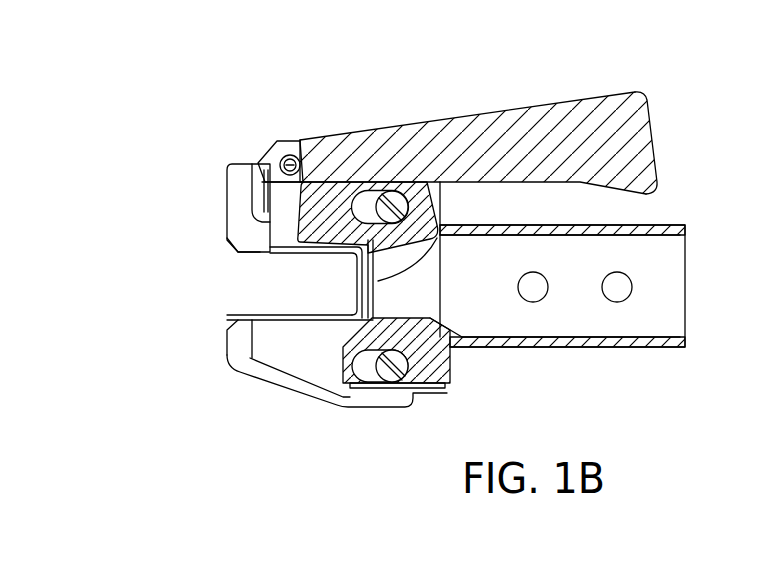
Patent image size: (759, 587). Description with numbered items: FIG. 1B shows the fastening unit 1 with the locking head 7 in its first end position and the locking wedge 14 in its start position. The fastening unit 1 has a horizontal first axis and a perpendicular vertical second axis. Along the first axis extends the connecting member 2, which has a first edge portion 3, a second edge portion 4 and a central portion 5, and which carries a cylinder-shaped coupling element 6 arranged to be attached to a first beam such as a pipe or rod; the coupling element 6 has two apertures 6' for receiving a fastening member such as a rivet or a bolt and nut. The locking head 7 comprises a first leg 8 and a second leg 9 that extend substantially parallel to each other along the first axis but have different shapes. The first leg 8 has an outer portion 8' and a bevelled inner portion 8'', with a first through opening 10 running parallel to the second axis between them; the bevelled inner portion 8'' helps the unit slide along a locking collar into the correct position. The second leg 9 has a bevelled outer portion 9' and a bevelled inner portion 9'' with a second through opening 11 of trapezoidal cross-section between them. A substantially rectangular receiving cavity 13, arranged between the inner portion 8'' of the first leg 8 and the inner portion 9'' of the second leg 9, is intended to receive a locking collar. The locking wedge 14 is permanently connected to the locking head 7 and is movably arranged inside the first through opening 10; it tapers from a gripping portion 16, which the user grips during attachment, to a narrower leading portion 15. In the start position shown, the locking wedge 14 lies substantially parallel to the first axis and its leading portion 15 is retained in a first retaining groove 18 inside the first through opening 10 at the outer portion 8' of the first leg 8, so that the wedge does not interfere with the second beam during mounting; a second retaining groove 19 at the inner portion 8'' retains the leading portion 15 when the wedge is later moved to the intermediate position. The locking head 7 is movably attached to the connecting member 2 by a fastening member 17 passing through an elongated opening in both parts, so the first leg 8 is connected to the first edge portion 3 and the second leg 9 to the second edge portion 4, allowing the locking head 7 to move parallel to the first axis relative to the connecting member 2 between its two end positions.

The fastening unit 1 is at (640, 74).
The connecting member 2 is at (448, 297).
The first edge portion 3 is at (370, 187).
The second edge portion 4 is at (413, 373).
The central portion 5 is at (427, 270).
The coupling element 6 is at (586, 286).
The apertures 6' is at (575, 352).
The locking head 7 is at (307, 396).
The first leg 8 is at (216, 208).
The outer portion of the first leg 8' is at (280, 138).
The inner portion of the first leg 8'' is at (259, 282).
The second leg 9 is at (197, 343).
The outer portion of the second leg 9' is at (334, 393).
The inner portion of the second leg 9'' is at (261, 314).
The first through opening 10 is at (285, 215).
The second through opening 11 is at (273, 362).
The receiving cavity 13 is at (304, 293).
The locking wedge 14 is at (513, 145).
The leading portion 15 is at (307, 158).
The gripping portion 16 is at (620, 127).
The fastening member 17 is at (388, 367).
The first retaining groove 18 is at (280, 187).
The second retaining groove 19 is at (253, 237).